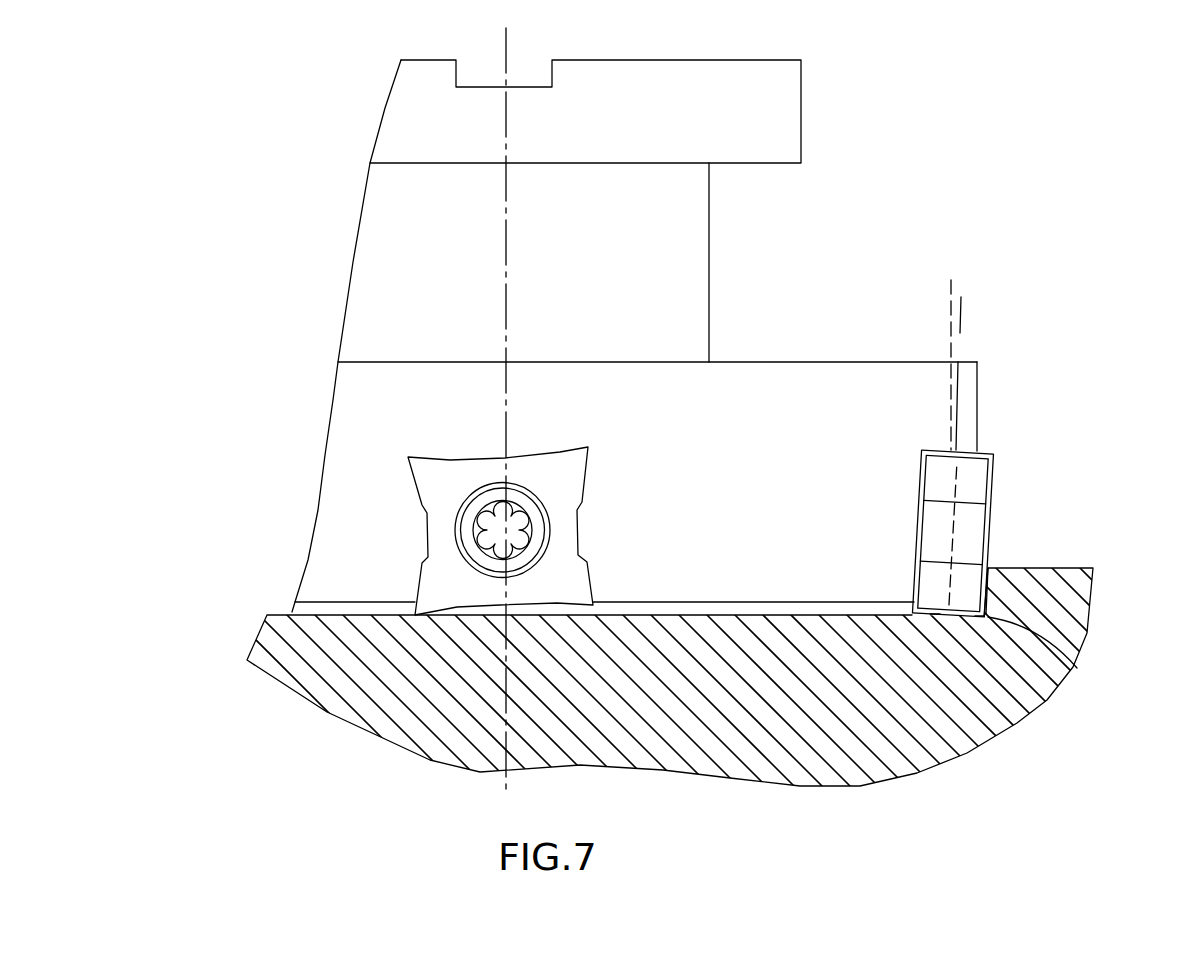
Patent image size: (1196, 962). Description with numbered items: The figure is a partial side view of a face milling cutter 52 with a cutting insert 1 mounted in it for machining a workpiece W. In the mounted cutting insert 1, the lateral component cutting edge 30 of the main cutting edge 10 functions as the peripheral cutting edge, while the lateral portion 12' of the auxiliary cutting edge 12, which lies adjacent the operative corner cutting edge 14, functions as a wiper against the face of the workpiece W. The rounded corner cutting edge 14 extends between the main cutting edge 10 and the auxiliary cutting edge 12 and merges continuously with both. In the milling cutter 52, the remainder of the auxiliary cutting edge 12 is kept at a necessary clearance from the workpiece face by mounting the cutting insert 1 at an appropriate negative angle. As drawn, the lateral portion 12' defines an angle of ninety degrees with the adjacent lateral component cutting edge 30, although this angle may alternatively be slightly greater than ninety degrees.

The cutting insert 1 is at (372, 480).
The face milling cutter 52 is at (835, 380).
The main cutting edge 10 is at (997, 528).
The workpiece W is at (1072, 600).
The lateral component cutting edge 30 is at (992, 578).
The corner cutting edge 14 is at (1075, 668).
The lateral portion of the auxiliary cutting edge 12' is at (1044, 706).
The auxiliary cutting edge 12 is at (975, 726).